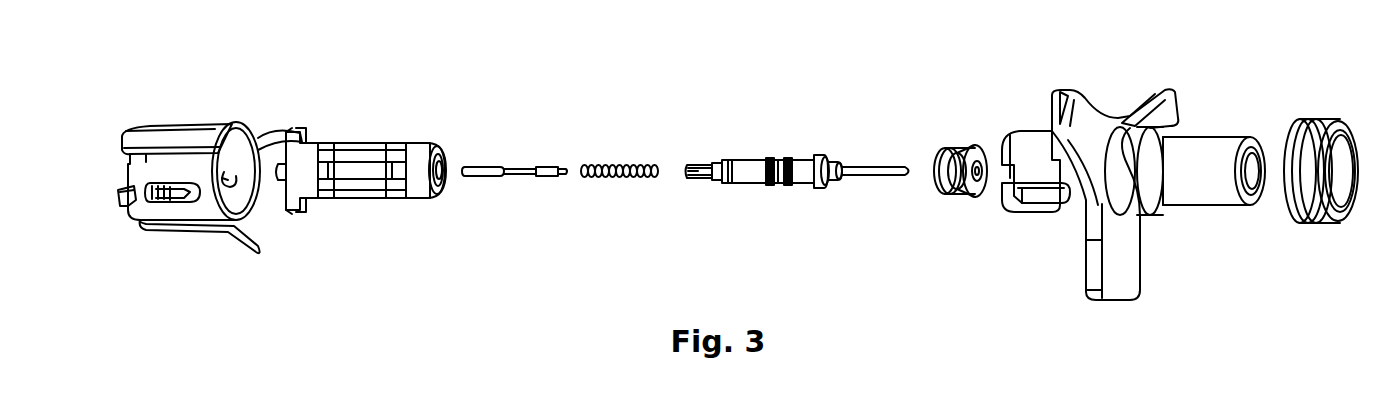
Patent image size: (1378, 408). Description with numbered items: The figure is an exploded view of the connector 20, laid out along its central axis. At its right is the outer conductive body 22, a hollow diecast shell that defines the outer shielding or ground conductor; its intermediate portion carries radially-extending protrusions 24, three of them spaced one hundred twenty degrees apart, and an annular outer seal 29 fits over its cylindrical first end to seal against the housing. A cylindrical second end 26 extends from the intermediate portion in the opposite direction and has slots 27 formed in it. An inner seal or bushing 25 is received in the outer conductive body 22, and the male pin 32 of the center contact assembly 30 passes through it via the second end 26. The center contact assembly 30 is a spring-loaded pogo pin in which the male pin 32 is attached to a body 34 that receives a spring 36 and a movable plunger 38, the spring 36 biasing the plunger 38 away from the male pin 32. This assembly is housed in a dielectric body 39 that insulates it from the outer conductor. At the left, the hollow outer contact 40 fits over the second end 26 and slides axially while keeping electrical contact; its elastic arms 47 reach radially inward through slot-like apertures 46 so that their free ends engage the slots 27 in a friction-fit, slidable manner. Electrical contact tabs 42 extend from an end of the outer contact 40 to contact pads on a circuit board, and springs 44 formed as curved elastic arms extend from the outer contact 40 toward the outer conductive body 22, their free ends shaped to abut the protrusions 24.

The connector 20 is at (150, 68).
The outer conductive body 22 is at (1214, 150).
The radially-extending protrusion 24 is at (1088, 118).
The inner seal or bushing 25 is at (950, 152).
The cylindrical second end 26 is at (1042, 142).
The slot 27 is at (1034, 190).
The annular outer seal 29 is at (1308, 122).
The center contact assembly 30 is at (671, 132).
The male pin 32 is at (882, 170).
The body 34 is at (752, 172).
The spring 36 is at (622, 168).
The plunger 38 is at (519, 168).
The dielectric body 39 is at (356, 172).
The outer contact 40 is at (172, 138).
The electrical contact tab 42 is at (124, 202).
The spring 44 is at (215, 232).
The slot-like aperture 46 is at (178, 196).
The elastic arm 47 is at (162, 200).